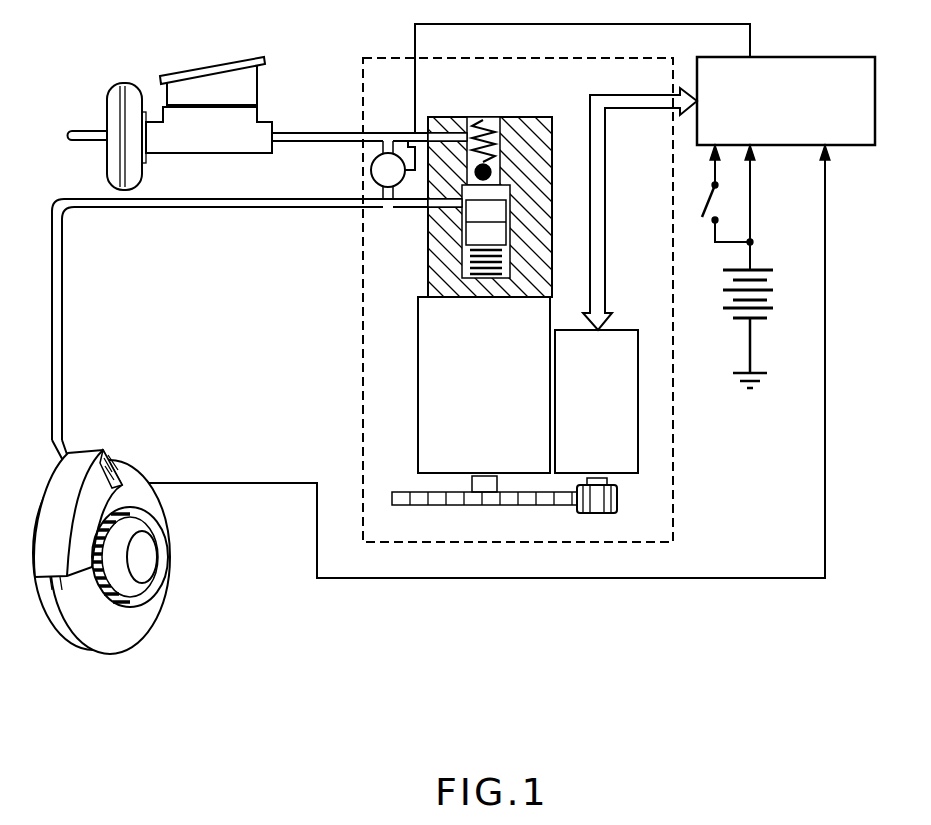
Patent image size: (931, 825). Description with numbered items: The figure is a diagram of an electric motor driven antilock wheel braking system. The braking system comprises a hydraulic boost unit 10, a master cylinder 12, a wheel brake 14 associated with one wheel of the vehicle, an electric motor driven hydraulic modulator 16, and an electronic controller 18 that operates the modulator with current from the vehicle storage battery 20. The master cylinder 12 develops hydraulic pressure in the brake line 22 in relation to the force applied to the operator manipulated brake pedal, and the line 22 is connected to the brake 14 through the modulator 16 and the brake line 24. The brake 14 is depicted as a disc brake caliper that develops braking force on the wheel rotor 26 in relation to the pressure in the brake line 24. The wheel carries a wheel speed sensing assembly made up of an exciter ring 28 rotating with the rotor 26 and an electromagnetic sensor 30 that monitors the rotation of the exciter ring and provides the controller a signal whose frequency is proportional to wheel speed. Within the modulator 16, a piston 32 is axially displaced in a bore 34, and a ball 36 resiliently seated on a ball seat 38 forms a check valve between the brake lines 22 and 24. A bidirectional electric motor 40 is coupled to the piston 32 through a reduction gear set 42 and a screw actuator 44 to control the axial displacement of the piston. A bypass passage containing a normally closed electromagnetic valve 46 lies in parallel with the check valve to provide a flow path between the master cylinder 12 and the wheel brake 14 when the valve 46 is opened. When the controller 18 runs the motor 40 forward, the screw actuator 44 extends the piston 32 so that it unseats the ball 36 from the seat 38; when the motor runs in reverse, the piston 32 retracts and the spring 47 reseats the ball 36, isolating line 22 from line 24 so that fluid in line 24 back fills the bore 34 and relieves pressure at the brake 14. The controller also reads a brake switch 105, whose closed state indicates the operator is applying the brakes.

The hydraulic boost unit 10 is at (113, 120).
The master cylinder 12 is at (220, 132).
The wheel brake 14 is at (140, 525).
The electric motor driven hydraulic modulator 16 is at (362, 337).
The electronic controller 18 is at (857, 128).
The vehicle storage battery 20 is at (765, 292).
The brake line 22 is at (348, 136).
The brake line 24 is at (168, 203).
The wheel rotor 26 is at (125, 623).
The exciter ring 28 is at (157, 568).
The electromagnetic sensor 30 is at (127, 468).
The piston 32 is at (467, 243).
The bore 34 is at (500, 258).
The ball 36 is at (470, 190).
The ball seat 38 is at (507, 170).
The bidirectional electric motor 40 is at (625, 397).
The reduction gear set 42 is at (543, 498).
The screw actuator 44 is at (428, 422).
The electromagnetic valve 46 is at (370, 169).
The spring 47 is at (483, 135).
The brake switch 105 is at (707, 202).